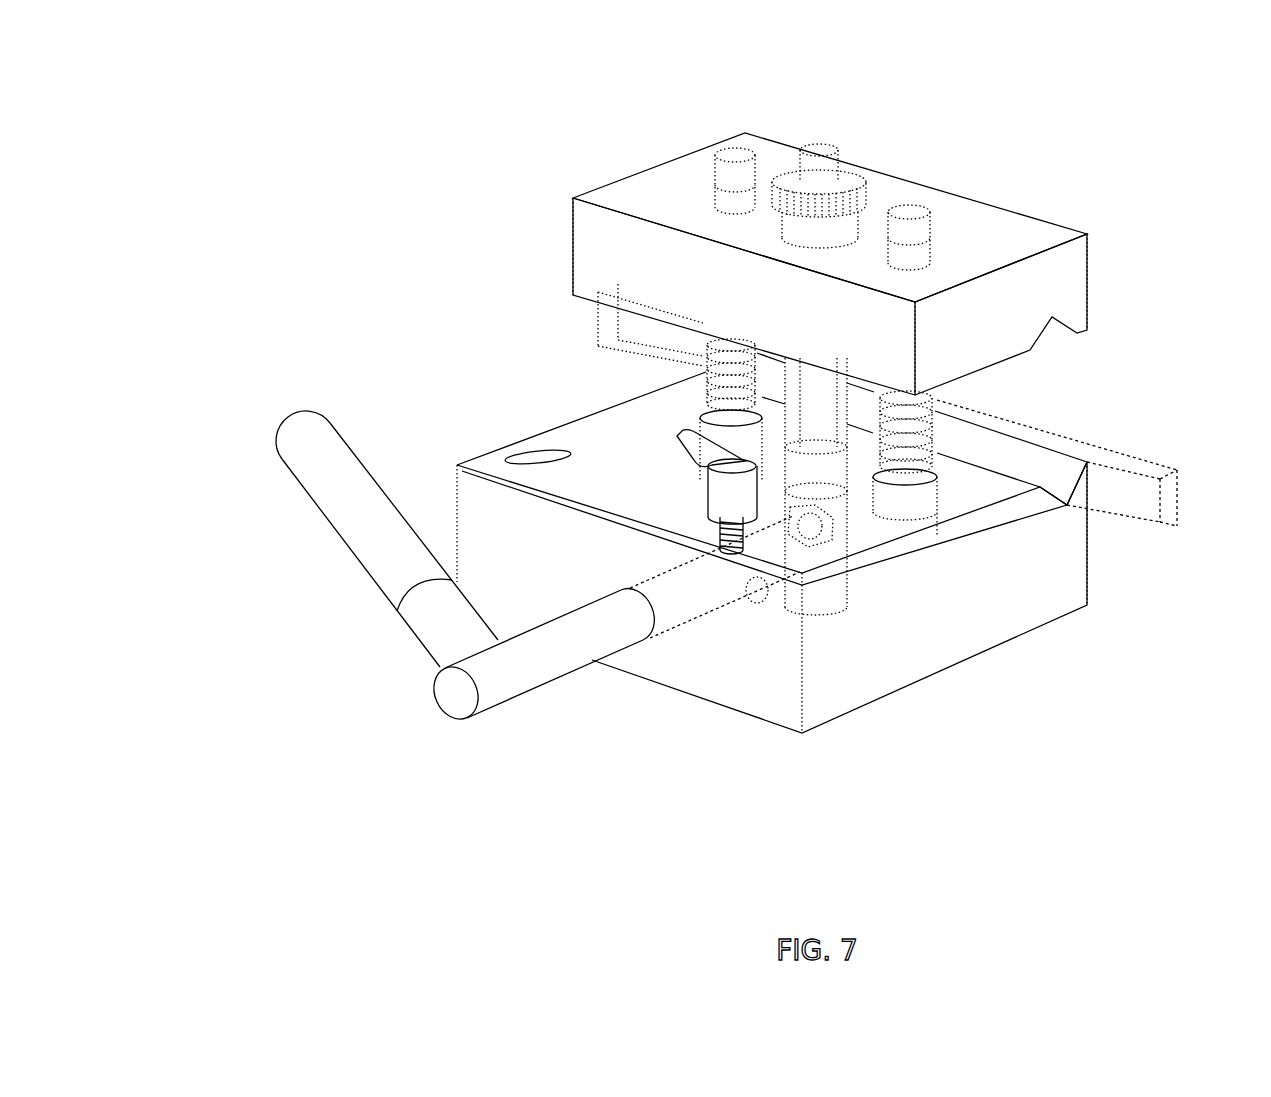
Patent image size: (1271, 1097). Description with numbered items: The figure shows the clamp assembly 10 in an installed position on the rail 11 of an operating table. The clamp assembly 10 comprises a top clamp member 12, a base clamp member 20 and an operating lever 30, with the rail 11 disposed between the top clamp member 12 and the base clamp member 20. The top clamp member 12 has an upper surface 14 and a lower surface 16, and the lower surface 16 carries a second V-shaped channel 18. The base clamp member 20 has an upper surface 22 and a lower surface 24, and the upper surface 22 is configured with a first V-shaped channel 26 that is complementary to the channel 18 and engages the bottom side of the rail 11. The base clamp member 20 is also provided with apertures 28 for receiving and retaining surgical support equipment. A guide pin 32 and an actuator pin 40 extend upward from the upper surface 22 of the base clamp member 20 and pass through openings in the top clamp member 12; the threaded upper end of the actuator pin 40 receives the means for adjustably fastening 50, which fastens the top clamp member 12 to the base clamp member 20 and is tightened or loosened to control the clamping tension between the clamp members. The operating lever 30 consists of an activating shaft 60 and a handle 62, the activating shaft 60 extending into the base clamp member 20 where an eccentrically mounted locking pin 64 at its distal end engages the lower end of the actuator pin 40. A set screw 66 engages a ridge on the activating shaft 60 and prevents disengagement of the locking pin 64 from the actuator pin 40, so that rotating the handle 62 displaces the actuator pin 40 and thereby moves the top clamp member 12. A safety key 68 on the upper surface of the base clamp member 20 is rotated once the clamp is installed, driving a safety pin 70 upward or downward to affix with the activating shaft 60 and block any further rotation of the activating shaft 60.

The clamp assembly 10 is at (362, 84).
The rail 11 is at (1132, 452).
The top clamp member 12 is at (1075, 262).
The upper surface 14 is at (1028, 236).
The lower surface 16 is at (1031, 360).
The second V-shaped channel 18 is at (1045, 330).
The base clamp member 20 is at (996, 605).
The upper surface 22 is at (952, 496).
The lower surface 24 is at (952, 672).
The first V-shaped channel 26 is at (1033, 494).
The apertures 28 is at (538, 455).
The operating lever 30 is at (472, 746).
The guide pin 32 is at (730, 178).
The actuator pin 40 is at (856, 433).
The means for adjustably fastening 50 is at (849, 182).
The activating shaft 60 is at (524, 668).
The handle 62 is at (345, 510).
The locking pin 64 is at (792, 540).
The set screw 66 is at (758, 605).
The safety key 68 is at (717, 500).
The safety pin 70 is at (722, 527).